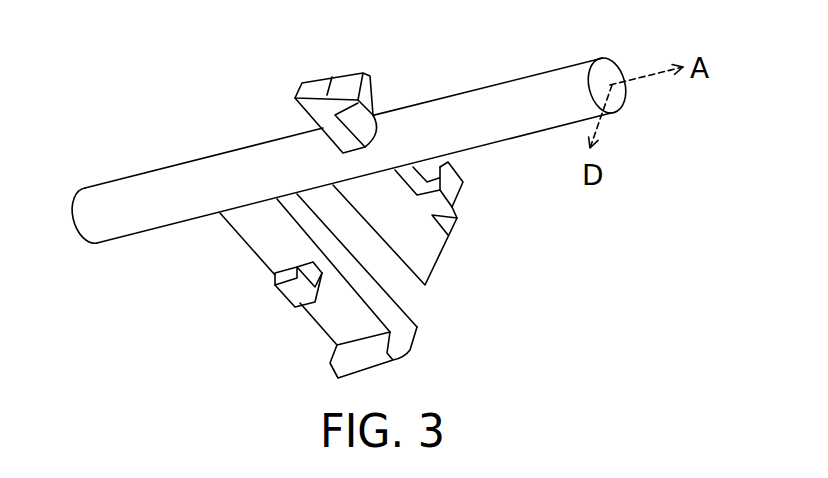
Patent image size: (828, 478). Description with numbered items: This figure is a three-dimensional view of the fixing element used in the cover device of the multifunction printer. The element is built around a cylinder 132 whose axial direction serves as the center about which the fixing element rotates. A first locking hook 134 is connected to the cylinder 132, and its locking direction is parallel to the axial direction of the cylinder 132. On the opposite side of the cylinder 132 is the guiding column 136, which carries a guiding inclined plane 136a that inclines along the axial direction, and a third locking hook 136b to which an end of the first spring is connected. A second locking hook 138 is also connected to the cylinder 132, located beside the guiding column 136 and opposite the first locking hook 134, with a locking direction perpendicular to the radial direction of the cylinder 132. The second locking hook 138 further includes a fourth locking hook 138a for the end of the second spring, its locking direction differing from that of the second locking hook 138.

The cylinder 132 is at (496, 102).
The first locking hook 134 is at (323, 107).
The guiding column 136 is at (460, 276).
The guiding inclined plane 136a is at (440, 260).
The third locking hook 136b is at (452, 187).
The second locking hook 138 is at (265, 250).
The fourth locking hook 138a is at (290, 295).